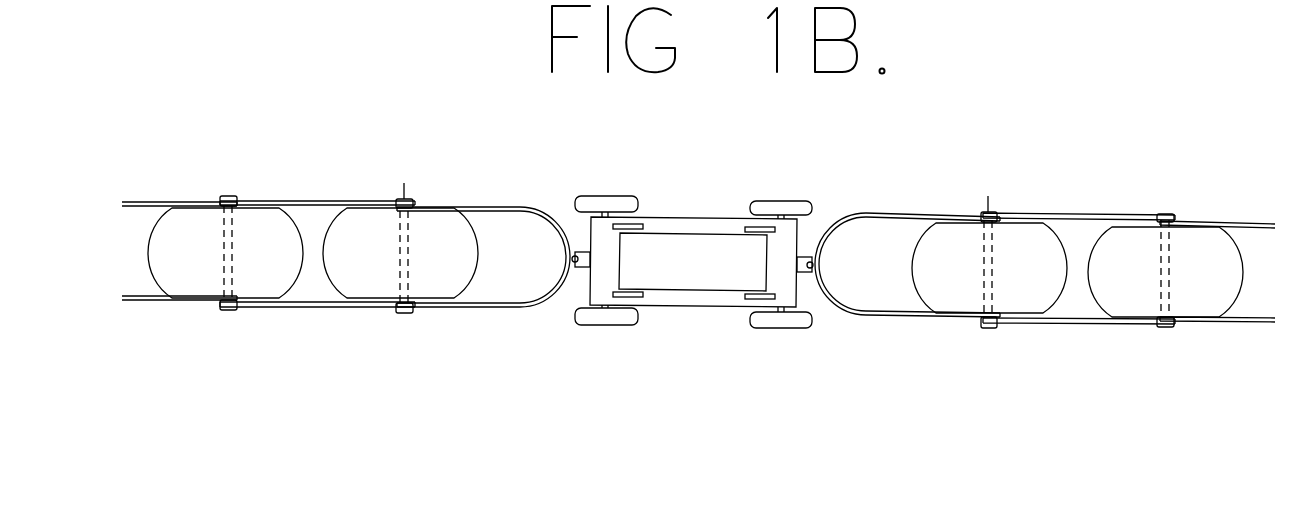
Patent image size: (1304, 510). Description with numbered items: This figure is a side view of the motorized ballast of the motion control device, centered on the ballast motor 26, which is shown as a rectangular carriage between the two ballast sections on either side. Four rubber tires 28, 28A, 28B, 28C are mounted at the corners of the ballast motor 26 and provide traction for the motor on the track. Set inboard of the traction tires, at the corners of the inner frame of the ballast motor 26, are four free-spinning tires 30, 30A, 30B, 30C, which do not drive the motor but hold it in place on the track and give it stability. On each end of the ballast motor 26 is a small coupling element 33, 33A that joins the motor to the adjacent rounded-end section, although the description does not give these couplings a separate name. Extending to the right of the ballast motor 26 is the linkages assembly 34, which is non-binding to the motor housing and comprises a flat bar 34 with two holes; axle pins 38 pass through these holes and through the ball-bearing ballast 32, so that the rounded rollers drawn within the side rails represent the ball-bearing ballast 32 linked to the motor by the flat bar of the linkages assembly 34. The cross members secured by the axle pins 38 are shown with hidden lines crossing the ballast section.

The ballast motor 26 is at (585, 277).
The rubber tire 28 is at (582, 193).
The rubber tire 28A is at (805, 195).
The rubber tire 28B is at (580, 327).
The rubber tire 28C is at (803, 332).
The free-spinning tire 30 is at (647, 218).
The free-spinning tire 30A is at (745, 221).
The free-spinning tire 30B is at (645, 304).
The free-spinning tire 30C is at (745, 303).
The ball-bearing ballast 32 is at (1018, 220).
The coupling 33 is at (583, 248).
The coupling 33A is at (804, 252).
The linkages assembly 34 is at (915, 212).
The axle pin 38 is at (988, 329).